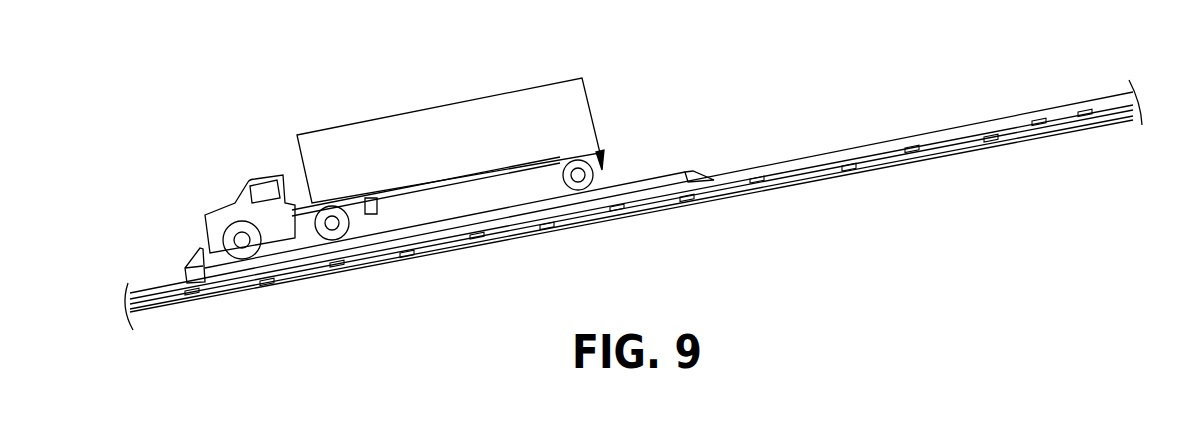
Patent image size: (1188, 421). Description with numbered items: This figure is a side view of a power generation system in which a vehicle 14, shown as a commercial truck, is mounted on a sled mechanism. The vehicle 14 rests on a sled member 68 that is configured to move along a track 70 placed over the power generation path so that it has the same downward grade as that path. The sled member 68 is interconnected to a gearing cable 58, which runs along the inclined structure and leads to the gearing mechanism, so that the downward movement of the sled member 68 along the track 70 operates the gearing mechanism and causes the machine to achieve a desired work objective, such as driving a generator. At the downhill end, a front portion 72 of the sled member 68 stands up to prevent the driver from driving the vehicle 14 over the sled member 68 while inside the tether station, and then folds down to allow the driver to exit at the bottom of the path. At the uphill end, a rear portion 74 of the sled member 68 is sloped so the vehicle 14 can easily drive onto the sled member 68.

The vehicle 14 is at (478, 125).
The gearing cable 58 is at (850, 150).
The sled member 68 is at (662, 186).
The track 70 is at (808, 182).
The front portion of the sled member 72 is at (185, 268).
The rear portion of the sled member 74 is at (698, 179).